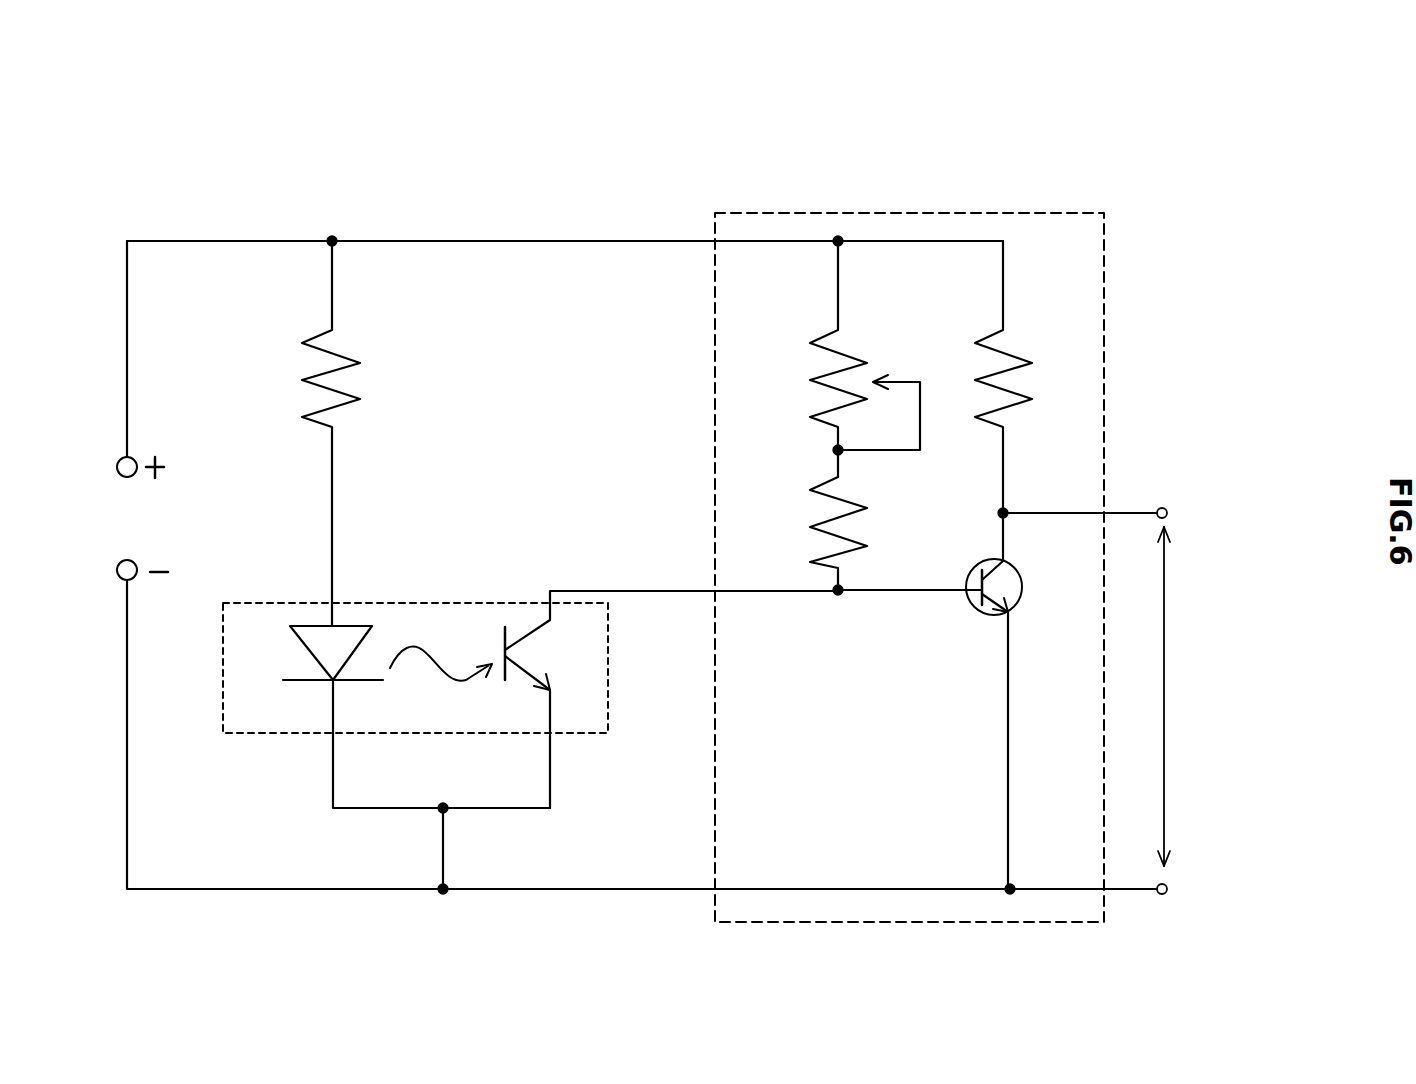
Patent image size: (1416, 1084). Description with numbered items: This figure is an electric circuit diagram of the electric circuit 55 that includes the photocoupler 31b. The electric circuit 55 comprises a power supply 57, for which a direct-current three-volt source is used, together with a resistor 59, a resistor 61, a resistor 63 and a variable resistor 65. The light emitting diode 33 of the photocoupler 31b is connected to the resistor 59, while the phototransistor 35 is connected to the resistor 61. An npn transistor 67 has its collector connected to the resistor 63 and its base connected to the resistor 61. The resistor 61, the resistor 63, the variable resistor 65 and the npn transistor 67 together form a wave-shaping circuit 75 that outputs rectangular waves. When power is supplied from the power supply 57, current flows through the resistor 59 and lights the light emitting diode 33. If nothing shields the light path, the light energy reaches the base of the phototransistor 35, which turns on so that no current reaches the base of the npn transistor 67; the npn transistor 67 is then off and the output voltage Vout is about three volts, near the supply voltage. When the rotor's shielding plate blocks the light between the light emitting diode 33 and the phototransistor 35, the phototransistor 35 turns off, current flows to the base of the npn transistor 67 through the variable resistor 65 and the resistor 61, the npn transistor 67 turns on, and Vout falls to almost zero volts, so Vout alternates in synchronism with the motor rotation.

The electric circuit 55 is at (1130, 158).
The power supply 57 is at (111, 518).
The resistor 59 is at (300, 433).
The photocoupler 31b is at (291, 735).
The light emitting diode 33 is at (391, 757).
The phototransistor 35 is at (671, 699).
The wave-shaping circuit 75 is at (818, 213).
The variable resistor 65 is at (838, 359).
The resistor 61 is at (812, 536).
The resistor 63 is at (1030, 400).
The npn transistor 67 is at (958, 724).